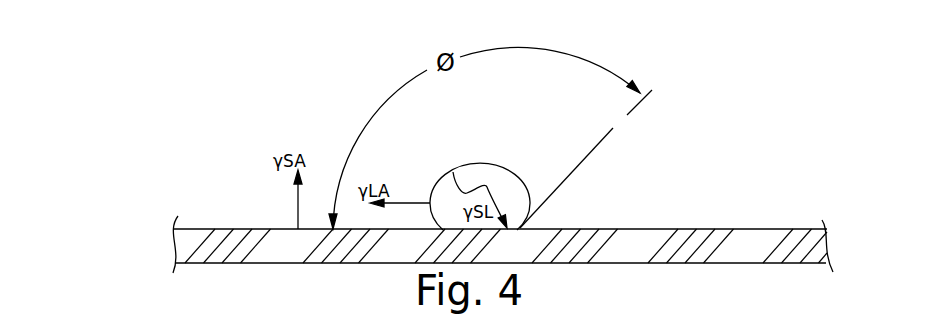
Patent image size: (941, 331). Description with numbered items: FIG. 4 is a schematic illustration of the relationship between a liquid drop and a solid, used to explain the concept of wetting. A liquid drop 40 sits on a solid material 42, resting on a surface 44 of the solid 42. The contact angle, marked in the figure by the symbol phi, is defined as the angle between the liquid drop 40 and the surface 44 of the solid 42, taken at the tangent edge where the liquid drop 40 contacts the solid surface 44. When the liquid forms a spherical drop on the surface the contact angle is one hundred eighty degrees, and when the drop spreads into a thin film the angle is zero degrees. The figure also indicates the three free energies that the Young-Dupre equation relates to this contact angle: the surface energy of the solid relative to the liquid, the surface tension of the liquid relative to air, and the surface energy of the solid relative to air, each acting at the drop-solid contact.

The liquid drop 40 is at (462, 163).
The solid material 42 is at (248, 200).
The surface of the solid 44 is at (773, 229).